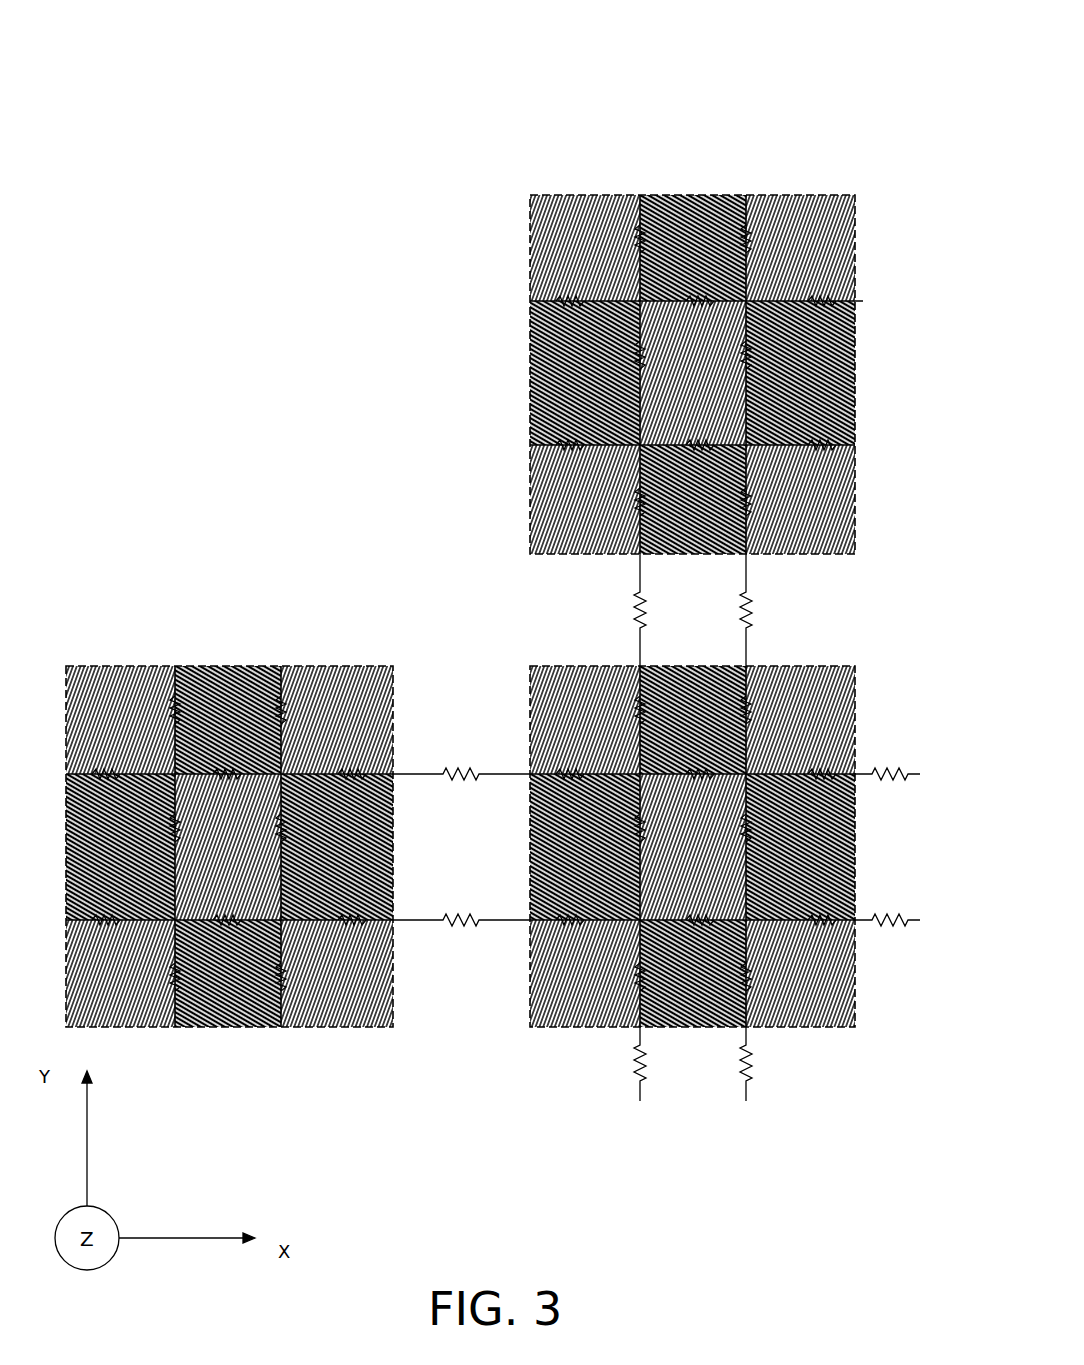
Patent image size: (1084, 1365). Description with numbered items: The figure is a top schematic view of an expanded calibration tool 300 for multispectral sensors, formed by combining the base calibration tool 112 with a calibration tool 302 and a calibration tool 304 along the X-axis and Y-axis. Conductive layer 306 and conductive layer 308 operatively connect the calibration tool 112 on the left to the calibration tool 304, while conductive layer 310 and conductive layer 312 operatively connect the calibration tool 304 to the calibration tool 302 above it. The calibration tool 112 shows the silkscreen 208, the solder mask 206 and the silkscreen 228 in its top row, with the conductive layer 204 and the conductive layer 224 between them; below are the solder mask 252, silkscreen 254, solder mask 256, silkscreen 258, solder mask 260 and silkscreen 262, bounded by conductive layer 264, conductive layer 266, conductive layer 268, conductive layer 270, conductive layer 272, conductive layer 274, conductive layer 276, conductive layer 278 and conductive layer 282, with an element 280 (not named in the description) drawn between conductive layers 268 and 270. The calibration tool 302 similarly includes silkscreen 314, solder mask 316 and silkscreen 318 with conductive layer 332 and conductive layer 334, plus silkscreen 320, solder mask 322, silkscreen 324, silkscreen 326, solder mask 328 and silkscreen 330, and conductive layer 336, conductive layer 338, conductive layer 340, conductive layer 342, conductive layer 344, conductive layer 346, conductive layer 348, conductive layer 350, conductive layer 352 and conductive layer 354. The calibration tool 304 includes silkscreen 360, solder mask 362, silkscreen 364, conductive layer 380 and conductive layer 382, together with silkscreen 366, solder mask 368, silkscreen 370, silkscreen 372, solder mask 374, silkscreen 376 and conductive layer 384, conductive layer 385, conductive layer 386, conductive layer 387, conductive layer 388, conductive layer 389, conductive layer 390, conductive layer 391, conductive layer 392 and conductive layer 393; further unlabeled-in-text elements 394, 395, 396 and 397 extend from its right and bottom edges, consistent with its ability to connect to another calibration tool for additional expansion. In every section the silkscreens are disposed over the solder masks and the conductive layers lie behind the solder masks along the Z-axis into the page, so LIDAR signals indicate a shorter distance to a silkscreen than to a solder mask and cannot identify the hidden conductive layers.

The calibration tool 300 is at (922, 26).
The calibration tool 302 is at (743, 350).
The calibration tool 304 is at (744, 813).
The calibration tool 112 is at (255, 811).
The conductive layer 306 is at (461, 759).
The conductive layer 308 is at (461, 903).
The conductive layer 310 is at (670, 610).
The conductive layer 312 is at (777, 610).
The connecting resistor 394 is at (899, 793).
The connecting resistor 395 is at (899, 938).
The connecting resistor 396 is at (665, 1065).
The connecting resistor 397 is at (772, 1065).
The silkscreen 314 is at (585, 248).
The solder mask 316 is at (693, 248).
The silkscreen 318 is at (800, 248).
The silkscreen 320 is at (585, 373).
The solder mask 322 is at (693, 373).
The silkscreen 324 is at (800, 373).
The silkscreen 326 is at (585, 499).
The solder mask 328 is at (693, 499).
The silkscreen 330 is at (800, 499).
The conductive layer 332 is at (659, 226).
The conductive layer 334 is at (766, 226).
The conductive layer 336 is at (588, 319).
The conductive layer 338 is at (714, 319).
The conductive layer 340 is at (832, 319).
The conductive layer 342 is at (659, 341).
The conductive layer 344 is at (766, 341).
The conductive layer 346 is at (588, 463).
The conductive layer 348 is at (714, 463).
The conductive layer 350 is at (829, 463).
The conductive layer 352 is at (659, 491).
The conductive layer 354 is at (766, 491).
The silkscreen 208 is at (120, 720).
The solder mask 206 is at (228, 720).
The silkscreen 228 is at (337, 720).
The solder mask 252 is at (120, 847).
The silkscreen 254 is at (228, 847).
The solder mask 256 is at (337, 847).
The silkscreen 258 is at (120, 973).
The solder mask 260 is at (228, 973).
The silkscreen 262 is at (337, 973).
The conductive layer 204 is at (197, 696).
The conductive layer 224 is at (304, 696).
The conductive layer 264 is at (197, 812).
The conductive layer 266 is at (304, 812).
The conductive layer 268 is at (197, 964).
The conductive layer 270 is at (304, 964).
The conductive layer 272 is at (126, 791).
The conductive layer 274 is at (248, 791).
The conductive layer 276 is at (366, 791).
The conductive layer 278 is at (126, 936).
The connection 280 is at (248, 936).
The conductive layer 282 is at (366, 936).
The silkscreen 360 is at (585, 720).
The solder mask 362 is at (693, 720).
The silkscreen 364 is at (800, 720).
The silkscreen 366 is at (585, 847).
The solder mask 368 is at (693, 847).
The silkscreen 370 is at (800, 847).
The silkscreen 372 is at (585, 973).
The solder mask 374 is at (693, 973).
The silkscreen 376 is at (800, 973).
The conductive layer 380 is at (660, 696).
The conductive layer 382 is at (766, 696).
The conductive layer 384 is at (589, 791).
The conductive layer 385 is at (712, 792).
The conductive layer 386 is at (832, 791).
The conductive layer 387 is at (660, 814).
The conductive layer 388 is at (766, 812).
The conductive layer 389 is at (589, 936).
The conductive layer 390 is at (712, 936).
The conductive layer 391 is at (832, 936).
The conductive layer 392 is at (660, 964).
The conductive layer 393 is at (766, 964).